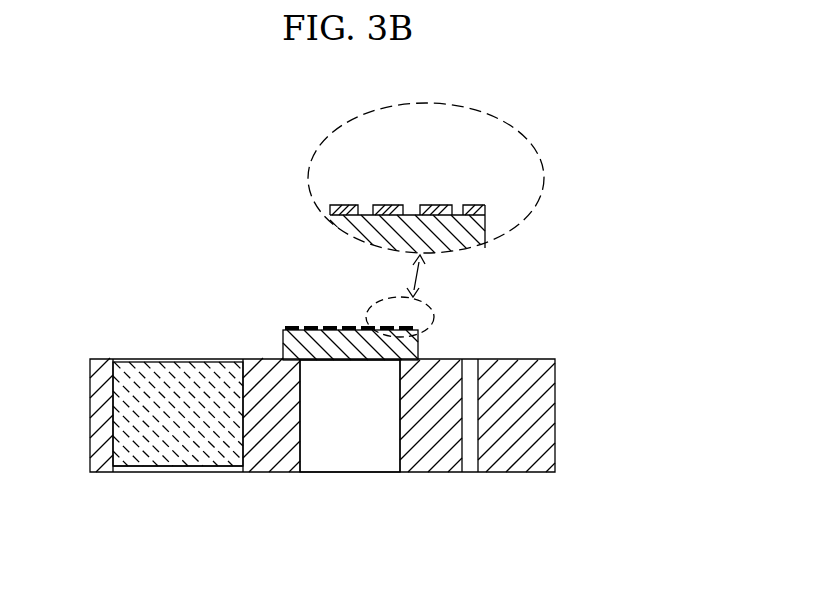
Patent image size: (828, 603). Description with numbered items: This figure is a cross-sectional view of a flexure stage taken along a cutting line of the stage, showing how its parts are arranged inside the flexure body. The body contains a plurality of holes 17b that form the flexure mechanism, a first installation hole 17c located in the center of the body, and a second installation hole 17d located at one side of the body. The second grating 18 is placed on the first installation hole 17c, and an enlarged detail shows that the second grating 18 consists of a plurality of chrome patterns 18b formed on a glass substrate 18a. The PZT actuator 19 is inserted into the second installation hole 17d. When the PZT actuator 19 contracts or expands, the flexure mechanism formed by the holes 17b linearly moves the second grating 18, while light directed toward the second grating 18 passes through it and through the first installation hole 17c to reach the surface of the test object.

The holes 17b is at (468, 463).
The first installation hole 17c is at (342, 463).
The second installation hole 17d is at (158, 358).
The second grating 18 is at (293, 327).
The glass substrate 18a is at (483, 245).
The chrome patterns 18b is at (485, 208).
The PZT actuator 19 is at (137, 473).